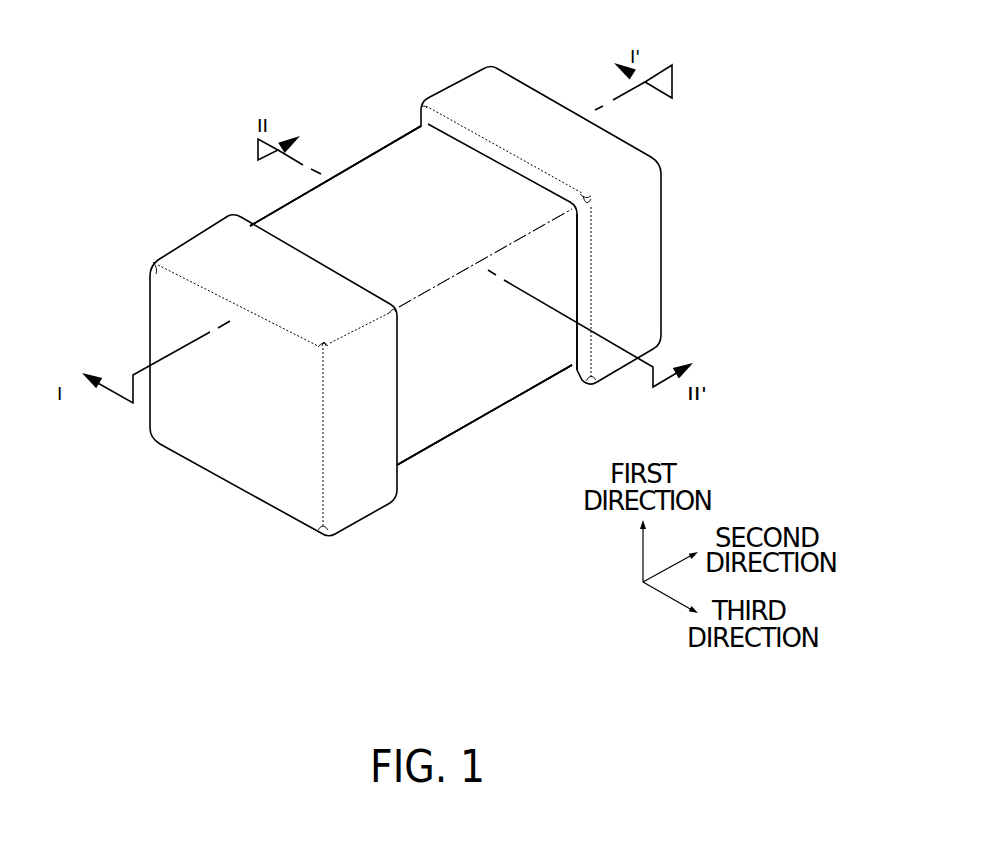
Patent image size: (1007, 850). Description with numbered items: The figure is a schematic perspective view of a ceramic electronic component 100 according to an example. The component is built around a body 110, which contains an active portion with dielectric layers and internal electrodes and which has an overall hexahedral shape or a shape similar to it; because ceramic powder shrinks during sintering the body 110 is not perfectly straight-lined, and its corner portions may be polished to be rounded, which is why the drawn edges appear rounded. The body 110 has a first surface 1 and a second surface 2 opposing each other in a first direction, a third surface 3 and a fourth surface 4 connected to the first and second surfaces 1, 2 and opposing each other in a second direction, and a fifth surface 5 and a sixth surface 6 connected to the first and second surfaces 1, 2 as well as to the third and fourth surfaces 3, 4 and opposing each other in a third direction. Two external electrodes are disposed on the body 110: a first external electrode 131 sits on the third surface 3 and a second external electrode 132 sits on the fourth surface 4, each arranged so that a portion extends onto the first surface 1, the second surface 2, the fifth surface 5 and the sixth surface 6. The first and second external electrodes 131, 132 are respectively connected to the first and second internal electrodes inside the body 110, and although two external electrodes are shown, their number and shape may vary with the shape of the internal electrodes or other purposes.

The ceramic electronic component 100 is at (189, 35).
The body 110 is at (283, 229).
The first external electrode 131 is at (208, 248).
The second external electrode 132 is at (464, 104).
The first surface 1 is at (420, 175).
The second surface 2 is at (447, 393).
The third surface 3 is at (240, 437).
The fourth surface 4 is at (619, 240).
The fifth surface 5 is at (360, 194).
The sixth surface 6 is at (509, 364).